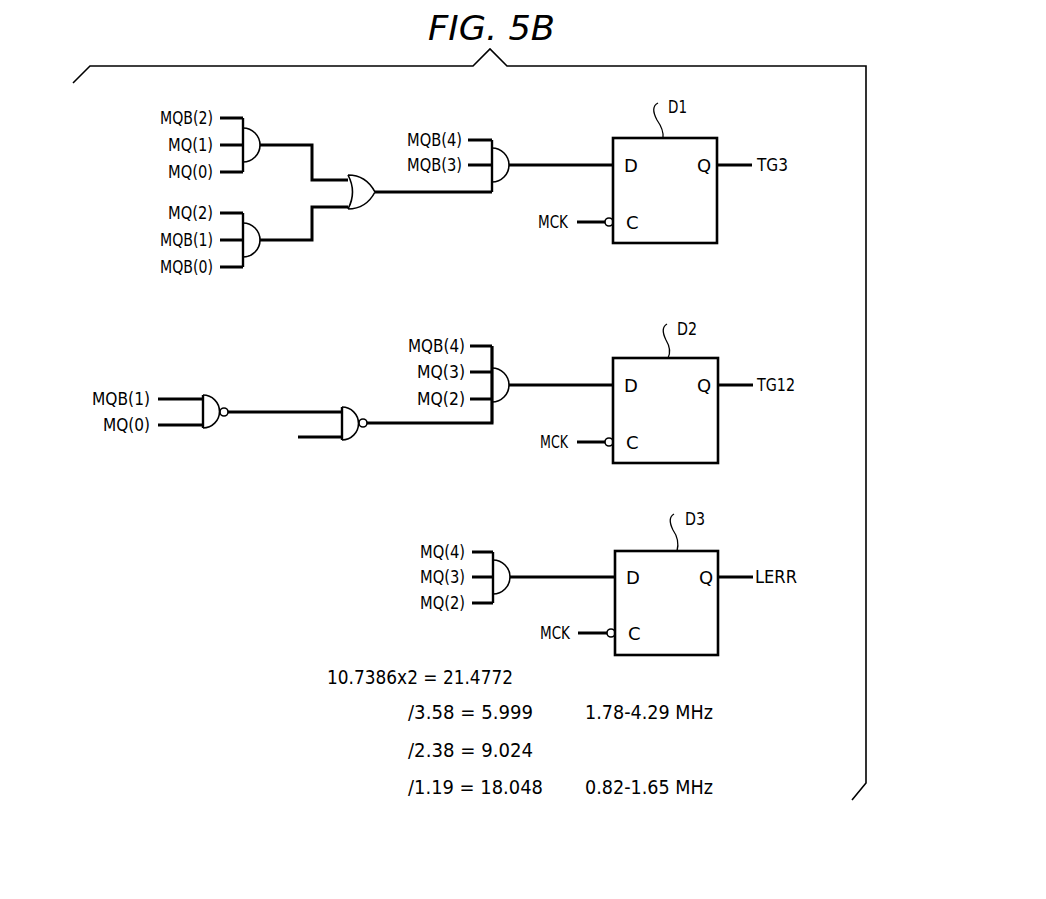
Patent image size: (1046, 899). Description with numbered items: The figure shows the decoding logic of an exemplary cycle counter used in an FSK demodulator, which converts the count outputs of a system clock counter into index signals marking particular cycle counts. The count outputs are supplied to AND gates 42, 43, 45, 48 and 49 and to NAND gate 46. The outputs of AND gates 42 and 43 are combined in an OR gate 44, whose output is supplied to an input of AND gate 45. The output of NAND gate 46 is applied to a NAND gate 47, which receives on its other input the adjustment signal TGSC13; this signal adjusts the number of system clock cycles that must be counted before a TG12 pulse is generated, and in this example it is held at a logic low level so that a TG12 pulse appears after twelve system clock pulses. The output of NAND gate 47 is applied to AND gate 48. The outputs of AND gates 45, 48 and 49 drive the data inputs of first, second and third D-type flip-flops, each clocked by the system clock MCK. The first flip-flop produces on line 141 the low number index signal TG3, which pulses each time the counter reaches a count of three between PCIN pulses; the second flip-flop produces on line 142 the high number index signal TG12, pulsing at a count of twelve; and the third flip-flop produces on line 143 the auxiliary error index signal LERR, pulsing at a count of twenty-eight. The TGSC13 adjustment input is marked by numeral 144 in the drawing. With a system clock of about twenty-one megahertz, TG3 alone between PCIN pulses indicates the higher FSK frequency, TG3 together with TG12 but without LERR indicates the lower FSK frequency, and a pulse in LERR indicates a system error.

The AND gate 42 is at (257, 132).
The AND gate 43 is at (257, 253).
The OR gate 44 is at (368, 207).
The AND gate 45 is at (503, 152).
The NAND gate 46 is at (217, 395).
The NAND gate 47 is at (352, 440).
The AND gate 48 is at (510, 370).
The AND gate 49 is at (507, 560).
The line 141 is at (775, 148).
The line 142 is at (778, 367).
The line 143 is at (778, 562).
The TGSC13 signal 144 is at (247, 452).